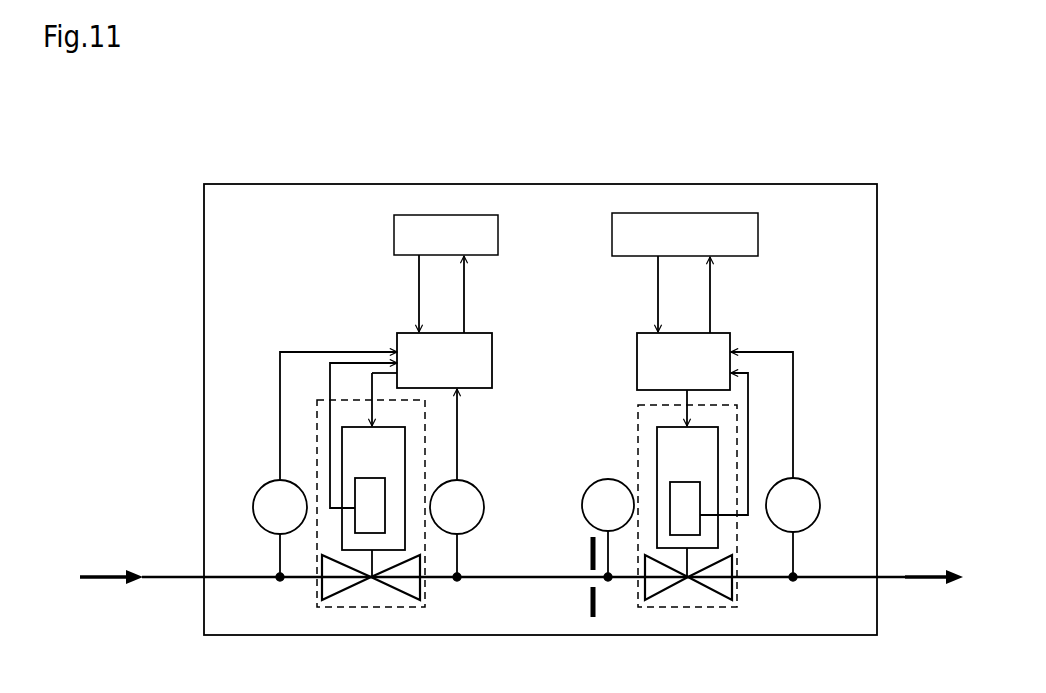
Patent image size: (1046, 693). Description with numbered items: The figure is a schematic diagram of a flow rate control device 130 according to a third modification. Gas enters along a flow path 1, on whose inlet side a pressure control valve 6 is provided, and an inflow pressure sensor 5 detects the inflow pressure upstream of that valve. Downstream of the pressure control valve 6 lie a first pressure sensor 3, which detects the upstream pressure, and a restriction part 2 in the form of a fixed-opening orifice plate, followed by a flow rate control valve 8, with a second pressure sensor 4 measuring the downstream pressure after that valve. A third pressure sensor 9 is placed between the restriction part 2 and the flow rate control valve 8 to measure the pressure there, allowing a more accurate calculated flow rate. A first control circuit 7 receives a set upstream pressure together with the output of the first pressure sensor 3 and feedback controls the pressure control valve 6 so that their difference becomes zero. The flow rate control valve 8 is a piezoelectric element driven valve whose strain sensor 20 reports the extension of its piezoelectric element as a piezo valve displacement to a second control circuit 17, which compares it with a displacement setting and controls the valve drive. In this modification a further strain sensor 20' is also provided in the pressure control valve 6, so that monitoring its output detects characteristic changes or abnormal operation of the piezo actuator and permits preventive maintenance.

The flow rate control device 130 is at (700, 184).
The flow path 1 is at (222, 578).
The restriction part 2 is at (586, 588).
The first pressure sensor 3 is at (480, 487).
The second pressure sensor 4 is at (818, 490).
The inflow pressure sensor 5 is at (257, 495).
The pressure control valve 6 is at (365, 607).
The first control circuit 7 is at (490, 333).
The flow rate control valve 8 is at (680, 607).
The third pressure sensor 9 is at (588, 486).
The second control circuit 17 is at (732, 334).
The strain sensor 20 is at (660, 445).
The strain sensor 20' is at (312, 446).